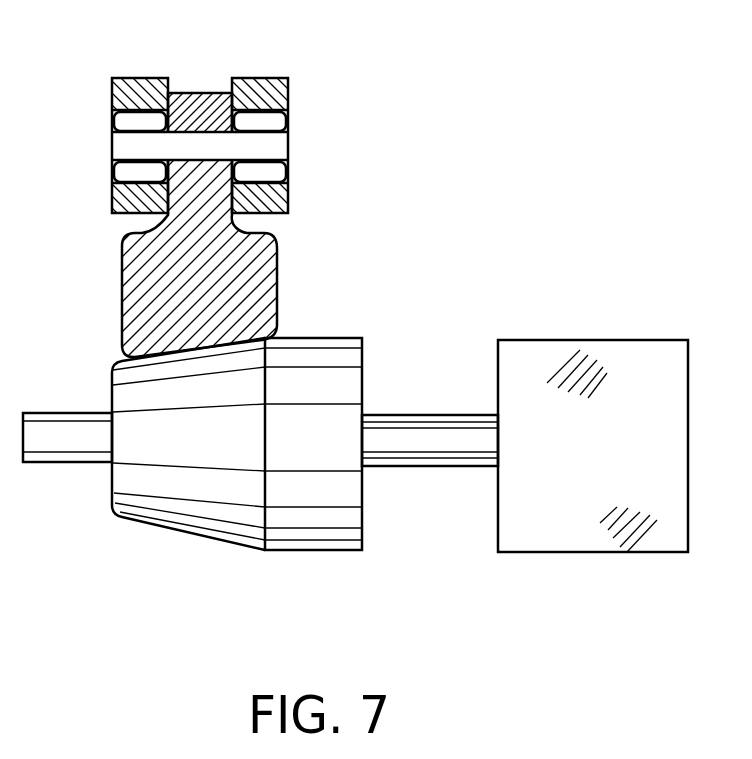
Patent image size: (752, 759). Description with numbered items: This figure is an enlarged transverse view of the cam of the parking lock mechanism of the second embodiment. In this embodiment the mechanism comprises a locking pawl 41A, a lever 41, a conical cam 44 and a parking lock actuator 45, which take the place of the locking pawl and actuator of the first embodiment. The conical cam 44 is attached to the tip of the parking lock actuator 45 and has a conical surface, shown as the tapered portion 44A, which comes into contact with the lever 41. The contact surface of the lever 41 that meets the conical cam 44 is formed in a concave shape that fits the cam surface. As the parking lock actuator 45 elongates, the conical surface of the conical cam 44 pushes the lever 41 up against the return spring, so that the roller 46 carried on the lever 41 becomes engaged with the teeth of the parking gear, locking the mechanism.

The lever 41 is at (262, 260).
The locking pawl 41A is at (203, 112).
The roller 46 is at (138, 84).
The tapered coupling 44A is at (203, 493).
The conical cam 44 is at (312, 500).
The parking lock actuator 45 is at (558, 527).